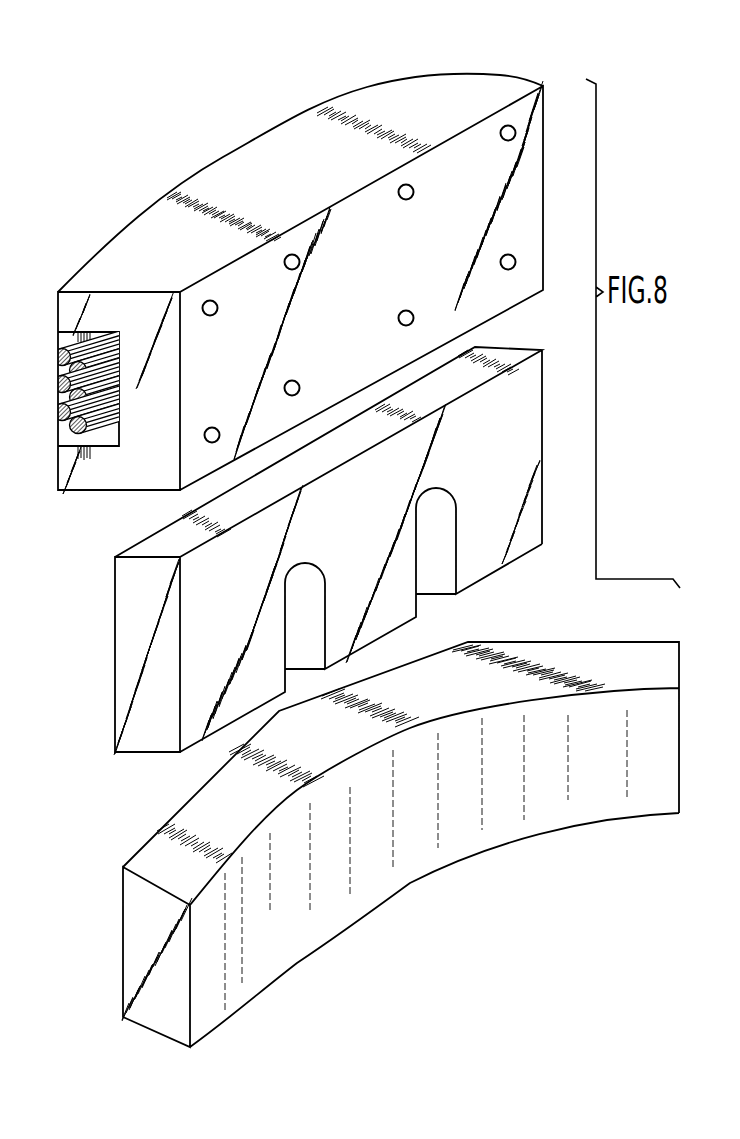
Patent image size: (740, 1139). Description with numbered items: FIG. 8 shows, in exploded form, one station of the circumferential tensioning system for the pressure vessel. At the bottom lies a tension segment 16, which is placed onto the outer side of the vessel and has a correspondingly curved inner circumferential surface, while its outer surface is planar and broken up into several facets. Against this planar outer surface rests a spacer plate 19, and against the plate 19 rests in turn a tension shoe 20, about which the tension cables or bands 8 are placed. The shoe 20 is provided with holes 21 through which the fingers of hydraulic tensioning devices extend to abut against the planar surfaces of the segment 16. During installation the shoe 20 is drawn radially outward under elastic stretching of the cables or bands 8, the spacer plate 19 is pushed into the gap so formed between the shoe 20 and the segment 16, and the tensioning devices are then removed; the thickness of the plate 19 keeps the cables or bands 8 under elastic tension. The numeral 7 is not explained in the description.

The cable 7 is at (52, 414).
The tension cables or bands 8 is at (74, 352).
The tension segment 16 is at (403, 863).
The spacer plate 19 is at (516, 400).
The tension shoe 20 is at (520, 178).
The hole 21 is at (516, 262).